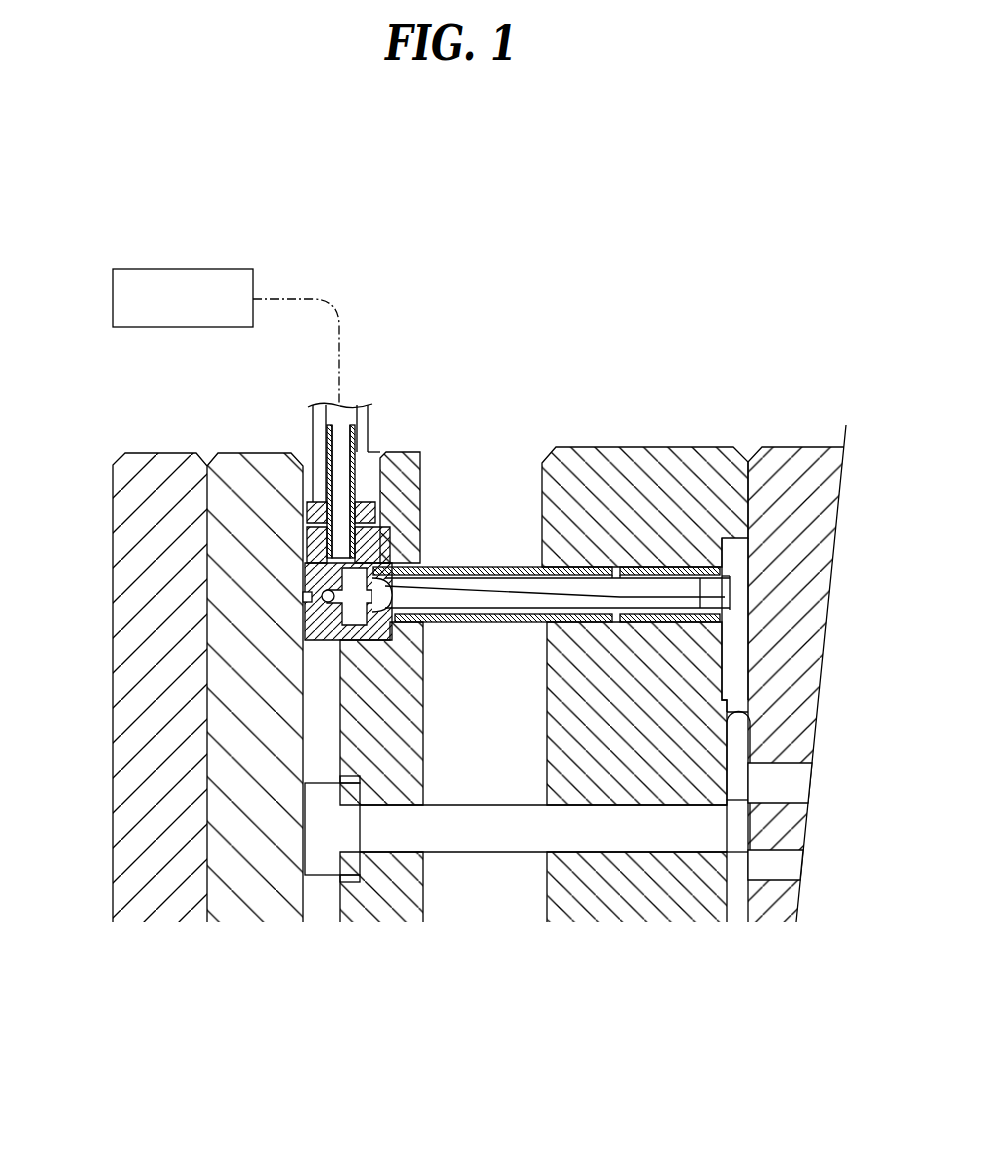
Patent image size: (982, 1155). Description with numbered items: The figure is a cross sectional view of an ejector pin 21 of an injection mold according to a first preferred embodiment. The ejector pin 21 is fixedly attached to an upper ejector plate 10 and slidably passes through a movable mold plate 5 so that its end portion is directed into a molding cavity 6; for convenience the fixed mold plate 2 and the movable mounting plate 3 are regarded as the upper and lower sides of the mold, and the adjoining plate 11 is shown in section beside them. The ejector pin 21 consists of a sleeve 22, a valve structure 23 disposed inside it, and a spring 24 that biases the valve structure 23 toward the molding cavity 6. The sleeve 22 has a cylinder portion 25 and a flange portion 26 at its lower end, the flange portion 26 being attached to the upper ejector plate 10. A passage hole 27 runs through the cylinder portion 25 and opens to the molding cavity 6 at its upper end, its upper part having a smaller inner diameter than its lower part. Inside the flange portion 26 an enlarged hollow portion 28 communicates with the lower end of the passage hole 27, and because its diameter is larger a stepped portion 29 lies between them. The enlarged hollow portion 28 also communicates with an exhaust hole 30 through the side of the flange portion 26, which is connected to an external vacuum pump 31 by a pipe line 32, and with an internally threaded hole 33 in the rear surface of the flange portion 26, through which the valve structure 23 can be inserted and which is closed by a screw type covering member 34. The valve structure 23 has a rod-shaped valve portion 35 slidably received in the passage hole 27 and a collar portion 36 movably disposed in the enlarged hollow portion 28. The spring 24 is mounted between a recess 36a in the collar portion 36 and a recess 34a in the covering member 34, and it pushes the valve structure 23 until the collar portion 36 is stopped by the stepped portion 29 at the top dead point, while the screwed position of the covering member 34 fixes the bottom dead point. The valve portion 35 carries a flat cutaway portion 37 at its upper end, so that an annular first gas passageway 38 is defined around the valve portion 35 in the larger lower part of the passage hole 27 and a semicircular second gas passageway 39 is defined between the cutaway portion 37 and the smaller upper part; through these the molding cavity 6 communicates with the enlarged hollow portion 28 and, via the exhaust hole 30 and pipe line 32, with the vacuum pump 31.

The fixed mold plate 2 is at (776, 900).
The movable mounting plate 3 is at (175, 880).
The movable mold plate 5 is at (660, 900).
The molding cavity 6 is at (738, 648).
The upper ejector plate 10 is at (393, 893).
The intermediate housing 11 is at (278, 877).
The ejector pin 21 is at (519, 630).
The sleeve 22 is at (484, 371).
The valve structure 23 is at (814, 341).
The spring 24 is at (338, 655).
The cylinder portion 25 is at (478, 567).
The flange portion 26 is at (400, 560).
The passage hole 27 is at (580, 567).
The enlarged hollow portion 28 is at (392, 640).
The stepped portion 29 is at (415, 575).
The exhaust hole 30 is at (312, 543).
The external vacuum pump 31 is at (113, 296).
The pipe line 32 is at (282, 298).
The internally threaded hole 33 is at (305, 640).
The covering member 34 is at (305, 627).
The recess 34a is at (310, 610).
The rod-shaped valve portion 35 is at (727, 592).
The collar portion 36 is at (697, 568).
The recess 36a is at (408, 622).
The cutaway portion 37 is at (607, 568).
The first gas passageway 38 is at (505, 565).
The second gas passageway 39 is at (653, 568).